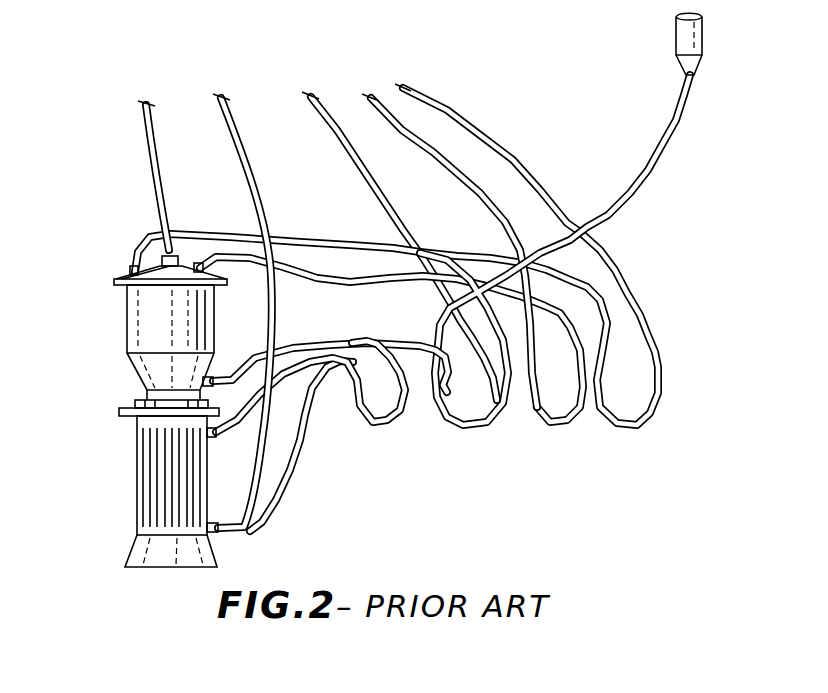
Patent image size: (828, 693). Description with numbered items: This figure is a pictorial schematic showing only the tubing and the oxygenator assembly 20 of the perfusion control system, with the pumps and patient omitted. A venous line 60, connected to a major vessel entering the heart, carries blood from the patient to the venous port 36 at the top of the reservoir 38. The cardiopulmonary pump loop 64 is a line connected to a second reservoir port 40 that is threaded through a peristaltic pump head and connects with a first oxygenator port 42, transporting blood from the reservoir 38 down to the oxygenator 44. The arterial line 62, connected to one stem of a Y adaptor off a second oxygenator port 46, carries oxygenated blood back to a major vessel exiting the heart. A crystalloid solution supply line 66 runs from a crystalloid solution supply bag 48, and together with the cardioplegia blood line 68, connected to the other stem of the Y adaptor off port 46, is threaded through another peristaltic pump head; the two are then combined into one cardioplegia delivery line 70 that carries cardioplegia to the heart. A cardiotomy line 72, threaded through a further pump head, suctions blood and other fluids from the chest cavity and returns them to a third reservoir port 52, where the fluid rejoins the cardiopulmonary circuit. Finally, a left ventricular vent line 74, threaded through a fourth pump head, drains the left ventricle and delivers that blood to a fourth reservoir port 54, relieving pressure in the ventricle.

The oxygenator assembly 20 is at (152, 385).
The venous port 36 is at (178, 258).
The reservoir 38 is at (127, 313).
The second reservoir port 40 is at (221, 373).
The first oxygenator port 42 is at (217, 437).
The oxygenator 44 is at (145, 490).
The second oxygenator port 46 is at (220, 532).
The crystalloid solution supply bag 48 is at (703, 44).
The third reservoir port 52 is at (132, 268).
The fourth reservoir port 54 is at (222, 272).
The venous line 60 is at (152, 152).
The arterial line 62 is at (233, 140).
The cardiopulmonary pump loop 64 is at (308, 342).
The crystalloid solution supply line 66 is at (684, 126).
The cardioplegia blood line 68 is at (307, 442).
The cardioplegia delivery line 70 is at (330, 128).
The cardiotomy line 72 is at (433, 150).
The left ventricular vent line 74 is at (446, 111).